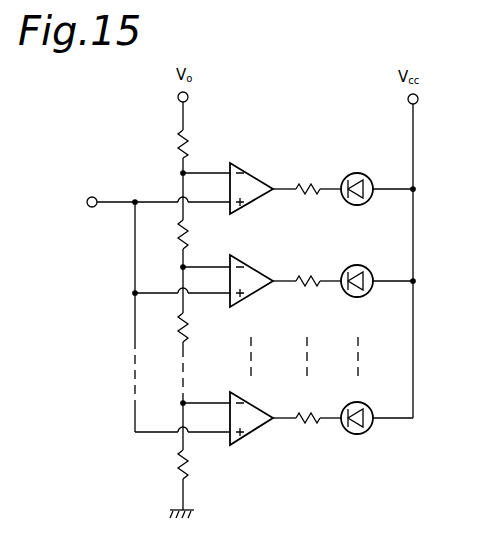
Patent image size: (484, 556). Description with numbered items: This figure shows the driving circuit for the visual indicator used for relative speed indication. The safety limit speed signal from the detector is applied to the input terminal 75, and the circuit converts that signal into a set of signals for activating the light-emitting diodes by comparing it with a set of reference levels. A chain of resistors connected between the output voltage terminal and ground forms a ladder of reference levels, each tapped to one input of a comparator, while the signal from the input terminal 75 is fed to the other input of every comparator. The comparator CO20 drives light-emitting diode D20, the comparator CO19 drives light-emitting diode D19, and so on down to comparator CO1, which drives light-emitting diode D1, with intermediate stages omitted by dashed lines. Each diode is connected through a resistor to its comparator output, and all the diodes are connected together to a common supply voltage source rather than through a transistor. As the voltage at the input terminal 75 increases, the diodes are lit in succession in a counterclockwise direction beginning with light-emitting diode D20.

The input terminal 75 is at (91, 207).
The comparator CO20 is at (253, 177).
The light-emitting diode D20 is at (357, 173).
The comparator CO19 is at (251, 269).
The light-emitting diode D19 is at (357, 264).
The comparator CO1 is at (251, 411).
The light-emitting diode D1 is at (357, 405).